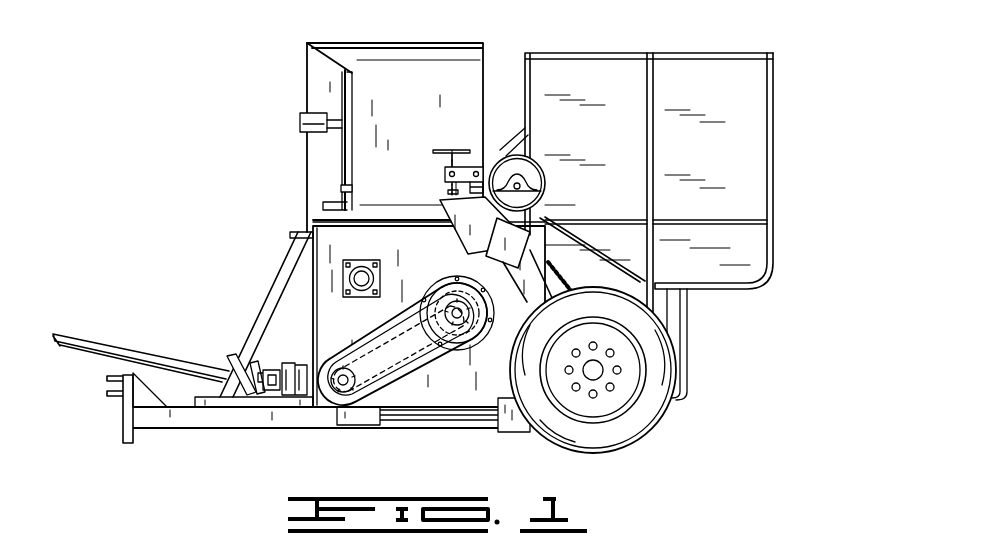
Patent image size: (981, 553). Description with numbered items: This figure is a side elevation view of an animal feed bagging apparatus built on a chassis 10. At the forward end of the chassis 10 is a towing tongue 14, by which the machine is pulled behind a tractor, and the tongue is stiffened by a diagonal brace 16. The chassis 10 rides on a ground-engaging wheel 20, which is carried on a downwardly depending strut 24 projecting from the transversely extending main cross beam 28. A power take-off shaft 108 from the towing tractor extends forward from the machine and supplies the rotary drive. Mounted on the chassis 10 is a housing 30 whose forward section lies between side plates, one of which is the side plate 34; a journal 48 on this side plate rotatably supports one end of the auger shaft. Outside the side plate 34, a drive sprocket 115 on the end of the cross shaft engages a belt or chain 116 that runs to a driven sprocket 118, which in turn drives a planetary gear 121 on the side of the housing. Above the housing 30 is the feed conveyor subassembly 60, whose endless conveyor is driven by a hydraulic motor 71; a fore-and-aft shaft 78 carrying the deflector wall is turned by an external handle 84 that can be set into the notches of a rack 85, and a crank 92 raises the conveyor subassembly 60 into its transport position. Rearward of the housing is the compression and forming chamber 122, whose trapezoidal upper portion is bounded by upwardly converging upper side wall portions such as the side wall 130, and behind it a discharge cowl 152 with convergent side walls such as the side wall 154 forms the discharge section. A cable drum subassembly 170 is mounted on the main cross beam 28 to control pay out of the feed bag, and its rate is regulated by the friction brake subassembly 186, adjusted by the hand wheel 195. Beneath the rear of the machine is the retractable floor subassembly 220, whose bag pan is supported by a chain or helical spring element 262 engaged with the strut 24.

The chassis 10 is at (252, 430).
The towing tongue 14 is at (187, 418).
The diagonal brace 16 is at (293, 277).
The ground-engaging wheel 20 is at (645, 418).
The strut 24 is at (547, 296).
The main cross beam 28 is at (537, 220).
The housing 30 is at (590, 45).
The side plate 34 is at (441, 253).
The journal 48 is at (366, 293).
The feed conveyor subassembly 60 is at (300, 91).
The hydraulic motor 71 is at (300, 125).
The fore-and-aft shaft 78 is at (315, 68).
The handle 84 is at (345, 163).
The rack 85 is at (345, 190).
The crank 92 is at (300, 230).
The power take-off shaft 108 is at (112, 346).
The drive sprocket 115 is at (340, 424).
The belt or chain 116 is at (366, 352).
The driven sprocket 118 is at (434, 300).
The planetary gear 121 is at (477, 343).
The compression and forming chamber 122 is at (617, 72).
The upper side wall portion 130 is at (605, 137).
The discharge cowl 152 is at (748, 198).
The side wall of discharge cowl 154 is at (726, 162).
The cable drum subassembly 170 is at (493, 146).
The friction brake subassembly 186 is at (462, 145).
The hand wheel 195 is at (454, 141).
The retractable floor subassembly 220 is at (521, 436).
The chain or helical spring element 262 is at (578, 281).